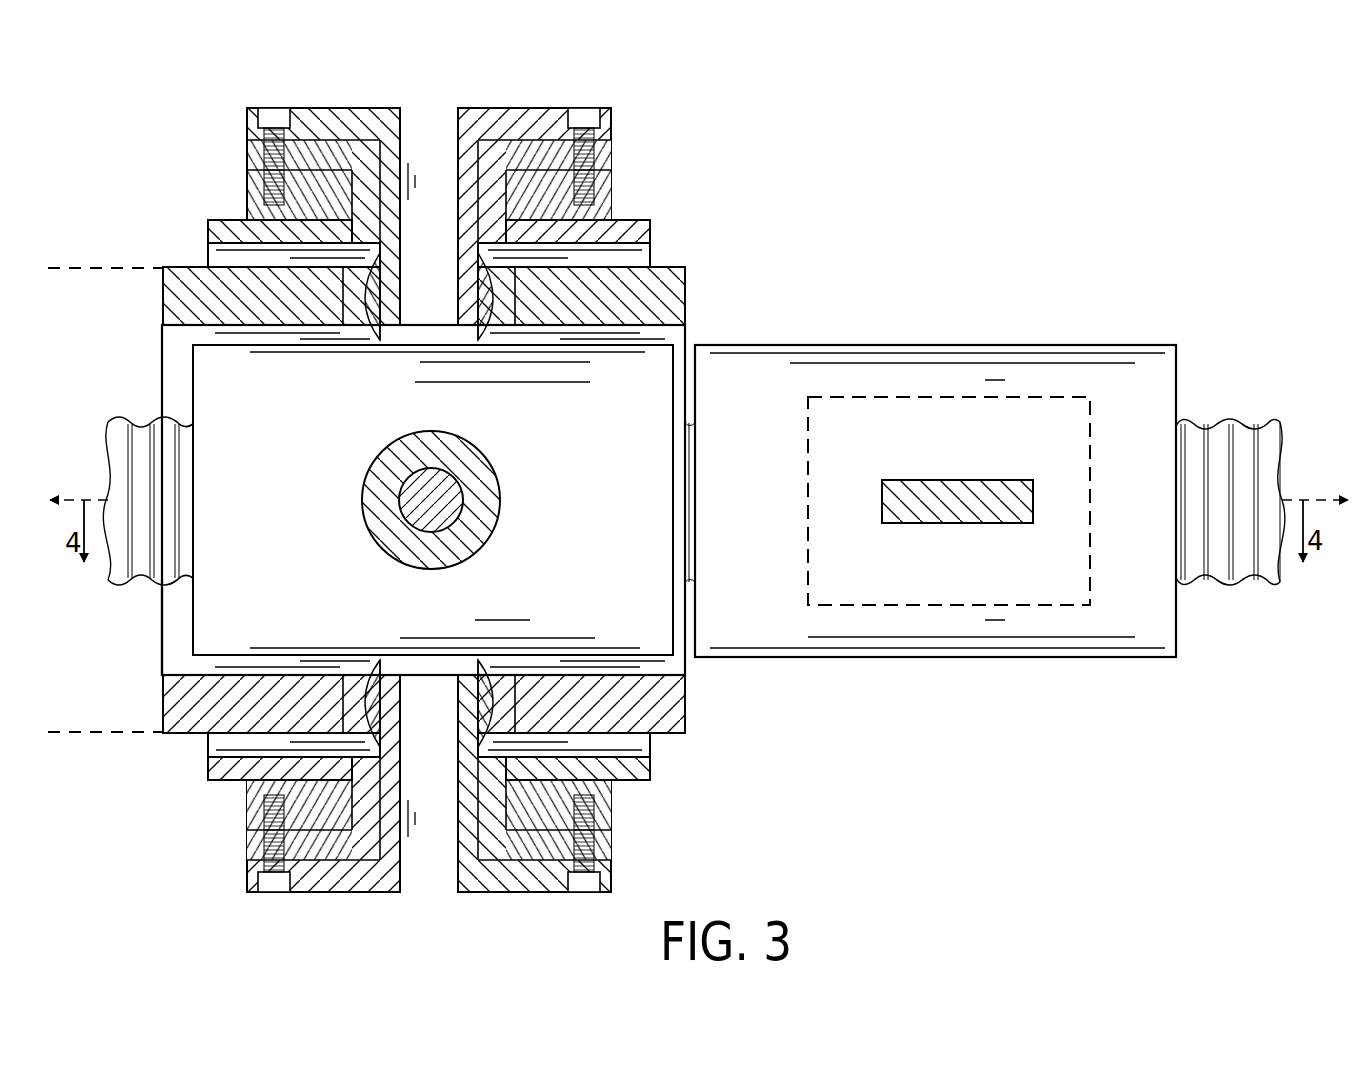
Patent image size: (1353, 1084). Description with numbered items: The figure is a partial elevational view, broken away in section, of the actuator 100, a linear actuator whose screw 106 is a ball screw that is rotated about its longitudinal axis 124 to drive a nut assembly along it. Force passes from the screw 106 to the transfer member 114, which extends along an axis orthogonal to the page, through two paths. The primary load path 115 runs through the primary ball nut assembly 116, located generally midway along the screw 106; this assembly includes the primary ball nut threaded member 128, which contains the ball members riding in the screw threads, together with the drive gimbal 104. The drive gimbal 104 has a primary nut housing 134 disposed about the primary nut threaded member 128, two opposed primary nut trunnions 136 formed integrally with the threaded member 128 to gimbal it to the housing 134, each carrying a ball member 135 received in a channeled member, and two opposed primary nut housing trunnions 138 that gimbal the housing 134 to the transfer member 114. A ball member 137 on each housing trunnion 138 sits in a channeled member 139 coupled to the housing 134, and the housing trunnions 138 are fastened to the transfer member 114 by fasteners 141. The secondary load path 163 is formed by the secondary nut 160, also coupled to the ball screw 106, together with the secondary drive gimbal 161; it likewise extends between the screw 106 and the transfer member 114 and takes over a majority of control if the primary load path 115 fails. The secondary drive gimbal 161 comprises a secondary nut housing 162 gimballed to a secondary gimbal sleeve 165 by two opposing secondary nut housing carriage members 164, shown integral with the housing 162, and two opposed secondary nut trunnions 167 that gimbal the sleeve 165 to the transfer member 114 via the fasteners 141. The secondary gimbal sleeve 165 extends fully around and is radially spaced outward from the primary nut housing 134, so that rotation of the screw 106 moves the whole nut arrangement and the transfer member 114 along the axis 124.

The actuator 100 is at (947, 755).
The drive gimbal 104 is at (122, 243).
The screw 106 is at (1258, 570).
The transfer member 114 is at (245, 205).
The primary load path 115 is at (143, 616).
The primary ball nut assembly 116 is at (146, 677).
The longitudinal axis 124 is at (1318, 495).
The primary ball nut threaded member 128 is at (192, 370).
The primary nut housing 134 is at (678, 313).
The ball member 135 is at (465, 440).
The primary nut trunnions 136 is at (385, 465).
The ball member 137 is at (510, 282).
The primary nut housing trunnions 138 is at (478, 108).
The channeled member 139 is at (517, 297).
The fasteners 141 is at (590, 108).
The secondary nut 160 is at (1070, 397).
The secondary drive gimbal 161 is at (920, 265).
The secondary nut housing 162 is at (990, 345).
The secondary load path 163 is at (1058, 682).
The secondary nut housing carriage members 164 is at (937, 480).
The secondary gimbal sleeve 165 is at (648, 236).
The secondary nut trunnions 167 is at (245, 152).